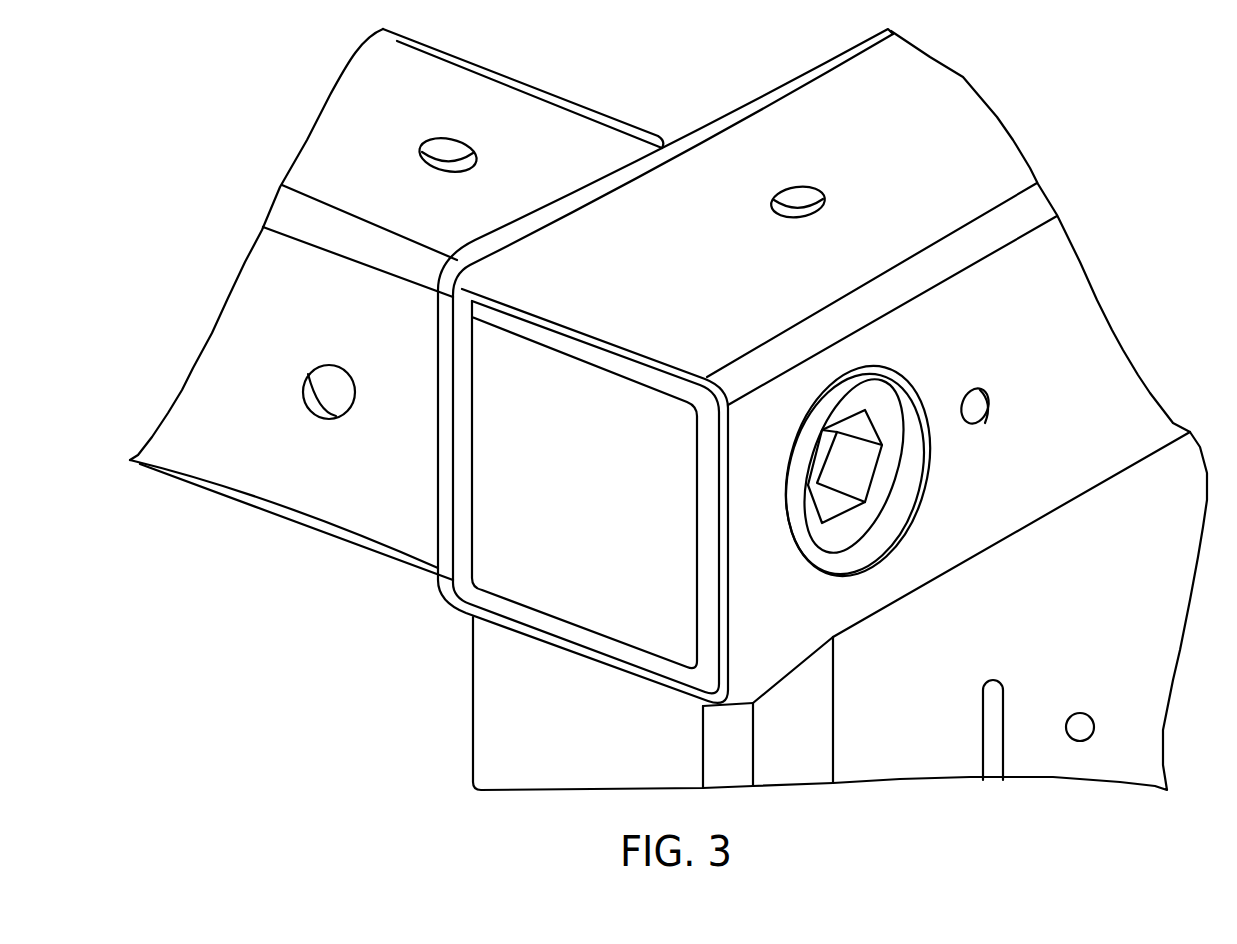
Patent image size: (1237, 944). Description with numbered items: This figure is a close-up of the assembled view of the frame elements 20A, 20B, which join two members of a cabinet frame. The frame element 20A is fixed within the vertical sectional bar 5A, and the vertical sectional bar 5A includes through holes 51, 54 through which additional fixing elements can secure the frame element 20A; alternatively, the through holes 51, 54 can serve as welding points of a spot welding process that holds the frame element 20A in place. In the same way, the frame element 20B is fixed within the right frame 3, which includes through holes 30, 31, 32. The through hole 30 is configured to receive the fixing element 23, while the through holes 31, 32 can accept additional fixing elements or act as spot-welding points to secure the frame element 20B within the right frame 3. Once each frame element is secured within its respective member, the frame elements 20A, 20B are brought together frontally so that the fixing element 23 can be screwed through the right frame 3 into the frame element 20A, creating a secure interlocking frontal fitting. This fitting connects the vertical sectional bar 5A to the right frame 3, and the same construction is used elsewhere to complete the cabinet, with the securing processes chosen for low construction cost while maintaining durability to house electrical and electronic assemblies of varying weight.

The right frame 3 is at (797, 98).
The vertical sectional bar 5A is at (320, 145).
The frame element 20A is at (338, 398).
The frame element 20B is at (593, 390).
The fixing element 23 is at (867, 398).
The through hole 30 is at (911, 495).
The through hole 31 is at (804, 197).
The through hole 32 is at (989, 412).
The through hole 51 is at (432, 155).
The through hole 54 is at (308, 395).